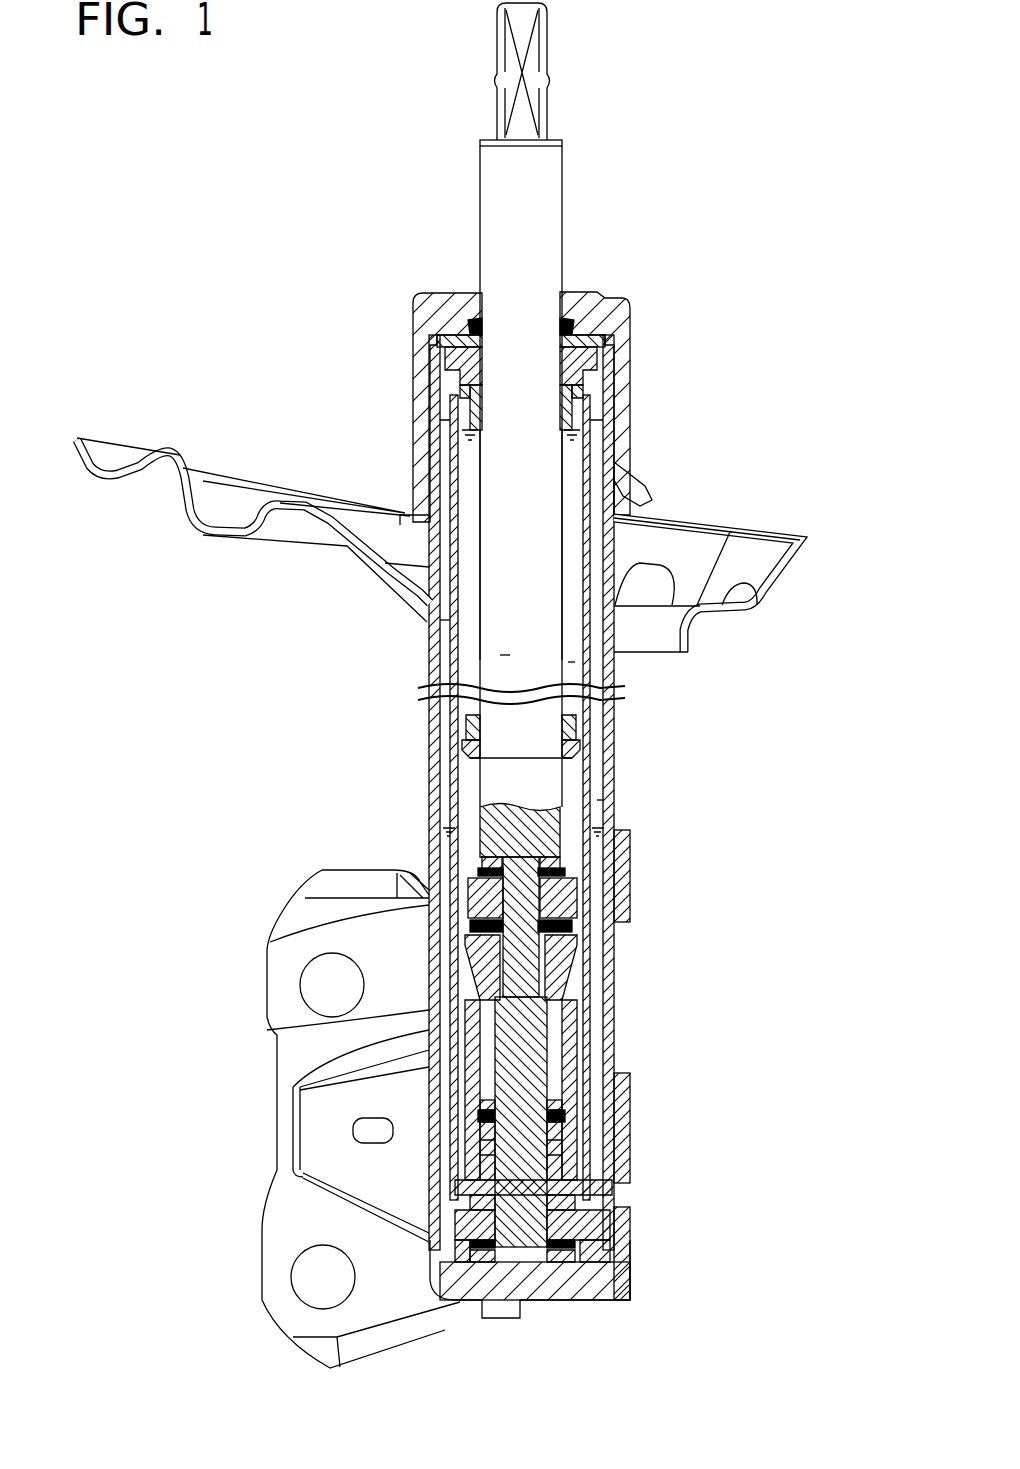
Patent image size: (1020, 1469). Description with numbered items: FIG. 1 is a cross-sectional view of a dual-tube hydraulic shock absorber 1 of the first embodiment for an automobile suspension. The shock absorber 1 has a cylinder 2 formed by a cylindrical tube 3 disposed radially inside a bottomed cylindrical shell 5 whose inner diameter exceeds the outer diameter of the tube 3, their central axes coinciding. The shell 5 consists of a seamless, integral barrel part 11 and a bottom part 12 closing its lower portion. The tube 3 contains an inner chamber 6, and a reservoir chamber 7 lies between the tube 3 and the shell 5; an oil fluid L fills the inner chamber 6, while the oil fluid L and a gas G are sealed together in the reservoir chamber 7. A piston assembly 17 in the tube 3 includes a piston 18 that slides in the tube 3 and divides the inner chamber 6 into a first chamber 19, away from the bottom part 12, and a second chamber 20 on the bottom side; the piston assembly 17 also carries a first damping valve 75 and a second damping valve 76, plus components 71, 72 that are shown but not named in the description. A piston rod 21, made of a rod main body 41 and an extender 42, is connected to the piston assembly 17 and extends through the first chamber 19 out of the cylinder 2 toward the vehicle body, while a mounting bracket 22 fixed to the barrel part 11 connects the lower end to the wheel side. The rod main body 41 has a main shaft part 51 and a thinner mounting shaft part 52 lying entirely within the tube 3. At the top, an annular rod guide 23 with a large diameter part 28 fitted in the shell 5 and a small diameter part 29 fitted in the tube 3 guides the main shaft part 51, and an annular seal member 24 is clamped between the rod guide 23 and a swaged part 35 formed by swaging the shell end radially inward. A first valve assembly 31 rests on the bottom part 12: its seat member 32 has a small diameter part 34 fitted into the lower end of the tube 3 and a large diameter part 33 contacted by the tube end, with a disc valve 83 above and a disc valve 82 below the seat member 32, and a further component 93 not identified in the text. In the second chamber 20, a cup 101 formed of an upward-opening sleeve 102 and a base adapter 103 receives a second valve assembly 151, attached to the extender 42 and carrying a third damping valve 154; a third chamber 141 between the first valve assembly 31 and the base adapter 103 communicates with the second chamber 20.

The shock absorber 1 is at (718, 158).
The piston rod 21 is at (568, 232).
The rod guide 23 is at (445, 365).
The seal member 24 is at (470, 340).
The swaged part 35 is at (600, 330).
The large diameter part 28 is at (598, 360).
The small diameter part 29 is at (590, 392).
The gas G is at (445, 457).
The rod main body 41 is at (568, 470).
The barrel part 11 is at (429, 730).
The tube 3 is at (590, 767).
The shell 5 is at (597, 790).
The reservoir chamber 7 is at (597, 810).
The inner chamber 6 is at (467, 625).
The main shaft part 51 is at (500, 658).
The first chamber 19 is at (570, 665).
The cylinder 2 is at (623, 728).
The oil fluid L is at (470, 795).
The mounting shaft part 52 is at (468, 858).
The second damping valve 76 is at (462, 873).
The piston assembly 17 is at (592, 890).
The piston 18 is at (468, 897).
The piston passage 71 is at (578, 910).
The valve disc 72 is at (470, 925).
The first damping valve 75 is at (583, 938).
The second chamber 20 is at (580, 1005).
The extender 42 is at (553, 1047).
The cup 101 is at (462, 1017).
The sleeve 102 is at (470, 1040).
The third damping valve 154 is at (543, 1135).
The second valve assembly 151 is at (568, 1125).
The base adapter 103 is at (478, 1190).
The third chamber 141 is at (550, 1195).
The first valve assembly 31 is at (578, 1207).
The small diameter part 34 is at (592, 1232).
The large diameter part 33 is at (607, 1242).
The disc valve 83 is at (462, 1210).
The seat member 32 is at (475, 1245).
The disc valve 82 is at (487, 1266).
The passage 93 is at (580, 1266).
The bottom part 12 is at (533, 1290).
The mounting bracket 22 is at (287, 978).